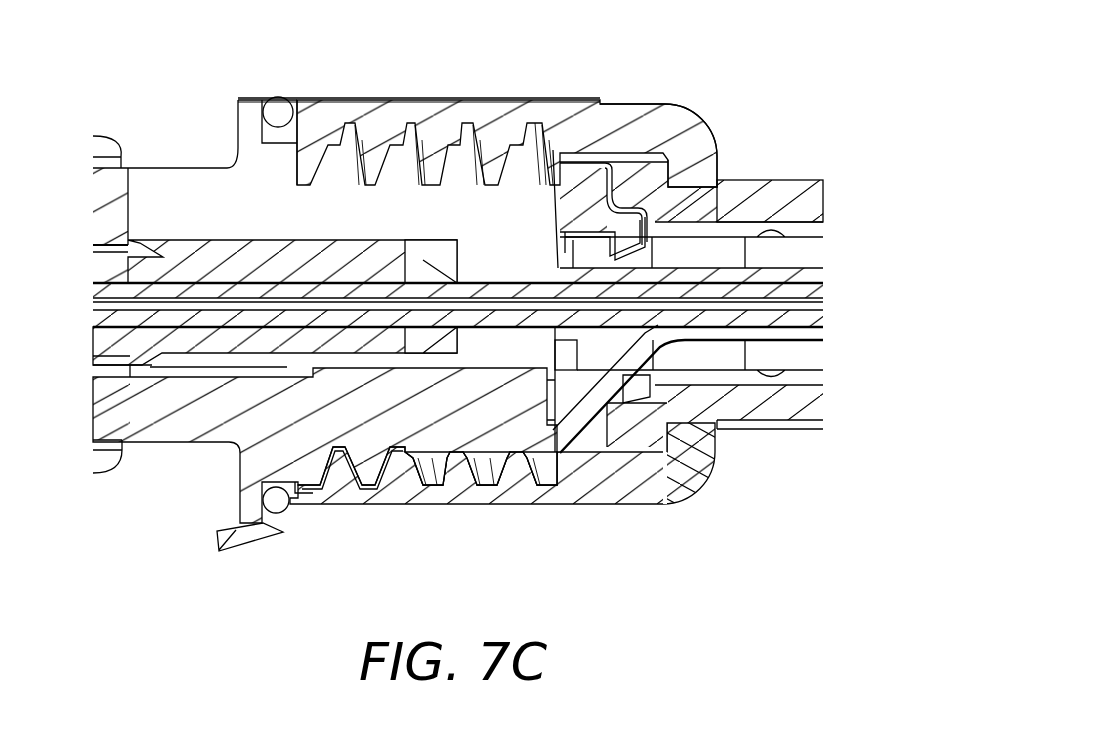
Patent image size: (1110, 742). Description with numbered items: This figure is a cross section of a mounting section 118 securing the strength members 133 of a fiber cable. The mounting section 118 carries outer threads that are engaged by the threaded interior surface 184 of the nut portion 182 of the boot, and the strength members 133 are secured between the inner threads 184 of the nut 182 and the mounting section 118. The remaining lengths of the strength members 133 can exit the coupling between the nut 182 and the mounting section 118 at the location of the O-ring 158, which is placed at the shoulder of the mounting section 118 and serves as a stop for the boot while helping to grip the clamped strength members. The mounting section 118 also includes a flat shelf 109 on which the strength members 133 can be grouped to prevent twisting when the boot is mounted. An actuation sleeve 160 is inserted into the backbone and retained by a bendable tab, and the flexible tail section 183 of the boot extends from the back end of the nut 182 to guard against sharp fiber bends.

The shelf 109 is at (503, 414).
The mounting section 118 is at (283, 422).
The strength members 133 is at (230, 533).
The O-ring 158 is at (281, 97).
The actuation sleeve 160 is at (397, 242).
The nut portion 182 is at (665, 117).
The tail section 183 is at (768, 178).
The threaded interior surface 184 is at (407, 463).